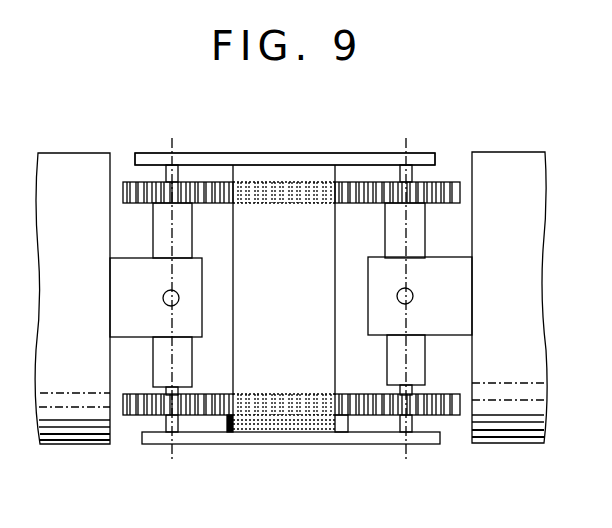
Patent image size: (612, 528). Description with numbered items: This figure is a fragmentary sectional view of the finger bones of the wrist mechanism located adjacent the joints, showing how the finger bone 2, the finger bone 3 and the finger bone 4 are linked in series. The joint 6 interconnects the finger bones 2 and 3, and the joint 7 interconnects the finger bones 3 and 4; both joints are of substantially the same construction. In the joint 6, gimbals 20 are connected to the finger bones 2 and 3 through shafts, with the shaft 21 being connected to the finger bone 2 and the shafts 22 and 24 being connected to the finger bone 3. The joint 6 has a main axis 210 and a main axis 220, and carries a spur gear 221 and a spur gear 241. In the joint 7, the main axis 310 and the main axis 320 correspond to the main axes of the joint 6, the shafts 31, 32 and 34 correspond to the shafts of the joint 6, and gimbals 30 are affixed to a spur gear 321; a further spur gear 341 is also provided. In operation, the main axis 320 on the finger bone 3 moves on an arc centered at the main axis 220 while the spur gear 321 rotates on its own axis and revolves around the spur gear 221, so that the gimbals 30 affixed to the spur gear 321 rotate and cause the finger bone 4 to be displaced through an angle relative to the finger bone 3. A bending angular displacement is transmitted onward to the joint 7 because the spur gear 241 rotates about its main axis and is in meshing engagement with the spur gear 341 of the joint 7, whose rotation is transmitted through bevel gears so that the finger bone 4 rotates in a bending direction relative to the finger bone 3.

The finger bone 2 is at (68, 160).
The finger bone 3 is at (290, 162).
The finger bone 4 is at (514, 162).
The joint 6 is at (140, 361).
The joint 7 is at (433, 345).
The gimbals 20 is at (156, 228).
The shaft 21 is at (163, 298).
The shaft 22 is at (168, 172).
The shaft 24 is at (178, 420).
The gimbals 30 is at (418, 235).
The shaft 31 is at (413, 296).
The shaft 32 is at (414, 176).
The shaft 34 is at (399, 420).
The main axis 210 is at (203, 296).
The main axis 220 is at (174, 347).
The spur gear 221 is at (207, 190).
The spur gear 241 is at (225, 418).
The main axis 310 is at (397, 296).
The main axis 320 is at (404, 213).
The spur gear 321 is at (365, 190).
The spur gear 341 is at (350, 420).